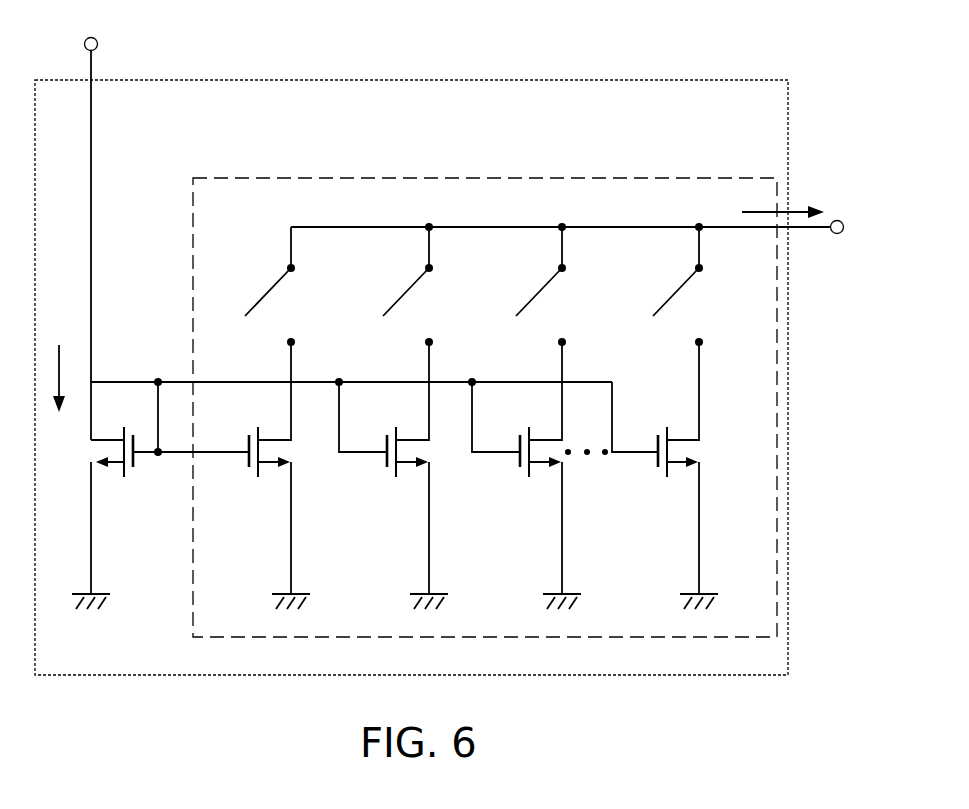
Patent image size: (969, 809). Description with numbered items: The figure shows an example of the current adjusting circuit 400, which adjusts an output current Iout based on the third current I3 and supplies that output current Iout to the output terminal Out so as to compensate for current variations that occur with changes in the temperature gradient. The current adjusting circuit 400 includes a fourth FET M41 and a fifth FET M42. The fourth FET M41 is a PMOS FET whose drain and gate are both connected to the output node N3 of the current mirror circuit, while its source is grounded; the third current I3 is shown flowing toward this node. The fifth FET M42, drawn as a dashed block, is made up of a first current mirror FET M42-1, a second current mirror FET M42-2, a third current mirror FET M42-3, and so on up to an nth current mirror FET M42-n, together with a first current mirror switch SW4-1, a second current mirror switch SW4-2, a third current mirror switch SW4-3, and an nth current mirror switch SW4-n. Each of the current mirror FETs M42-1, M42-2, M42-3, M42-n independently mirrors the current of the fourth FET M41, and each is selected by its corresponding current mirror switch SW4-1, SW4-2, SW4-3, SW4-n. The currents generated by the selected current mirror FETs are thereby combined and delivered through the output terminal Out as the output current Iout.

The current adjusting circuit 400 is at (747, 80).
The fifth FET M42 is at (701, 178).
The output node N3 is at (349, 313).
The third current I3 is at (70, 378).
The fourth FET M41 is at (160, 493).
The first current mirror FET M42-1 is at (259, 475).
The second current mirror FET M42-2 is at (391, 475).
The third current mirror FET M42-3 is at (524, 475).
The nth current mirror FET M42-n is at (665, 475).
The first current mirror switch SW4-1 is at (295, 268).
The second current mirror switch SW4-2 is at (433, 268).
The third current mirror switch SW4-3 is at (566, 268).
The nth current mirror switch SW4-n is at (703, 268).
The output current Iout is at (783, 202).
The output terminal Out is at (590, 229).